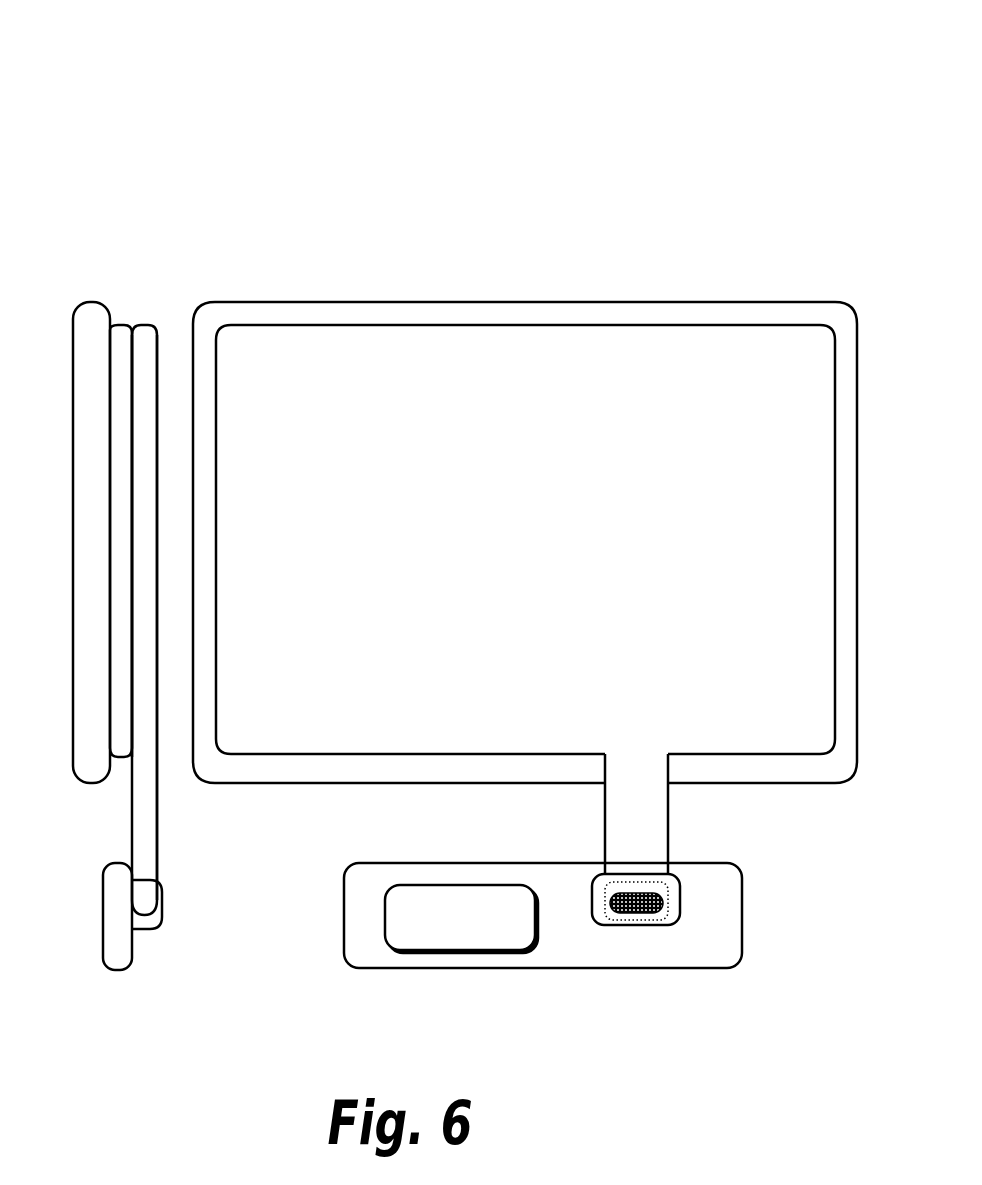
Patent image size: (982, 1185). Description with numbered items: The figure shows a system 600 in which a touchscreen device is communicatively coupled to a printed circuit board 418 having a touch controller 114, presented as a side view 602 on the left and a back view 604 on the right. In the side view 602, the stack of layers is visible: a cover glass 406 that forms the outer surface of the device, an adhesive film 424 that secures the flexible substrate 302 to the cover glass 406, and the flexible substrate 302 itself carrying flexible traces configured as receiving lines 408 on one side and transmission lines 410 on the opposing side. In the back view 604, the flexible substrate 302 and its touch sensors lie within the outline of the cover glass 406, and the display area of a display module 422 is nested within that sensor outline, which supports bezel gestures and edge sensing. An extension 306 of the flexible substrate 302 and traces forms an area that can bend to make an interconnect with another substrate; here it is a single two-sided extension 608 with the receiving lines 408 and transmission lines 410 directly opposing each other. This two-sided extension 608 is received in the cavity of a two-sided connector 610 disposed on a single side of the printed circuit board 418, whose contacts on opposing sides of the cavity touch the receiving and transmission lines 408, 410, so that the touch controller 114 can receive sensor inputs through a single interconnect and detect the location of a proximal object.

The system 600 is at (148, 58).
The back view 602 is at (106, 167).
The side view 604 is at (449, 167).
The cover glass 406 is at (90, 302).
The adhesive film 424 is at (122, 328).
The receiving lines 408 is at (127, 330).
The flexible substrate 302 is at (145, 328).
The transmission lines 410 is at (152, 330).
The display module 422 is at (343, 350).
The extension 306 is at (653, 327).
The single two-sided extension 608 is at (155, 842).
The two-sided connector 610 is at (162, 930).
The printed circuit board 418 is at (117, 972).
The touch controller 114 is at (461, 919).